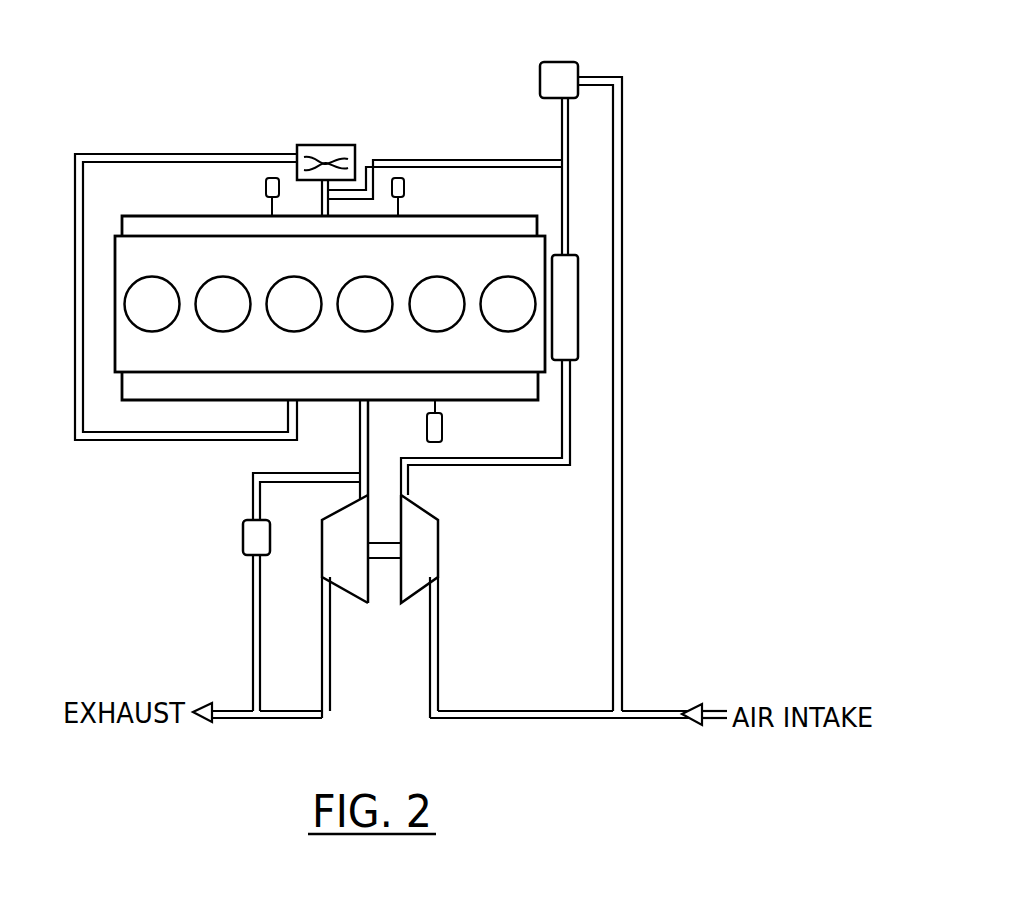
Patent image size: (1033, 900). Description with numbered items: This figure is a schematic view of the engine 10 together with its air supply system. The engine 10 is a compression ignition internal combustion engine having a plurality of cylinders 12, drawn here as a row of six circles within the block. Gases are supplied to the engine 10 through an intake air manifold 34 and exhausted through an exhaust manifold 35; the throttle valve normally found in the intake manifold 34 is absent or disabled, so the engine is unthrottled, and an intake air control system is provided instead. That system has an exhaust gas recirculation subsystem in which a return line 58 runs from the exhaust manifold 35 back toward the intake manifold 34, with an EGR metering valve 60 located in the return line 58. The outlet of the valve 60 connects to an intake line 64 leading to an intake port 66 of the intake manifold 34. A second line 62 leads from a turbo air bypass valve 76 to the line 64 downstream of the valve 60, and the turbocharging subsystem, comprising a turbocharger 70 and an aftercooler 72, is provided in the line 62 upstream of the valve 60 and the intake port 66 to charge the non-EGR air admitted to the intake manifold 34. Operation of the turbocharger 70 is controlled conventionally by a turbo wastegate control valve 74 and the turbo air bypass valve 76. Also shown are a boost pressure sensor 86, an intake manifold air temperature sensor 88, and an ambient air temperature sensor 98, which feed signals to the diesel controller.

The engine 10 is at (96, 267).
The cylinders 12 is at (222, 331).
The intake air manifold 34 is at (307, 223).
The exhaust manifold 35 is at (222, 390).
The return line 58 is at (73, 318).
The EGR metering valve 60 is at (327, 143).
The second line 62 is at (539, 120).
The intake line 64 is at (334, 206).
The intake port 66 is at (327, 207).
The turbocharger 70 is at (415, 583).
The aftercooler 72 is at (580, 298).
The turbo wastegate control valve 74 is at (243, 538).
The turbo air bypass valve 76 is at (561, 60).
The boost pressure sensor 86 is at (407, 188).
The intake manifold air temperature sensor 88 is at (264, 187).
The ambient air temperature sensor 98 is at (447, 428).